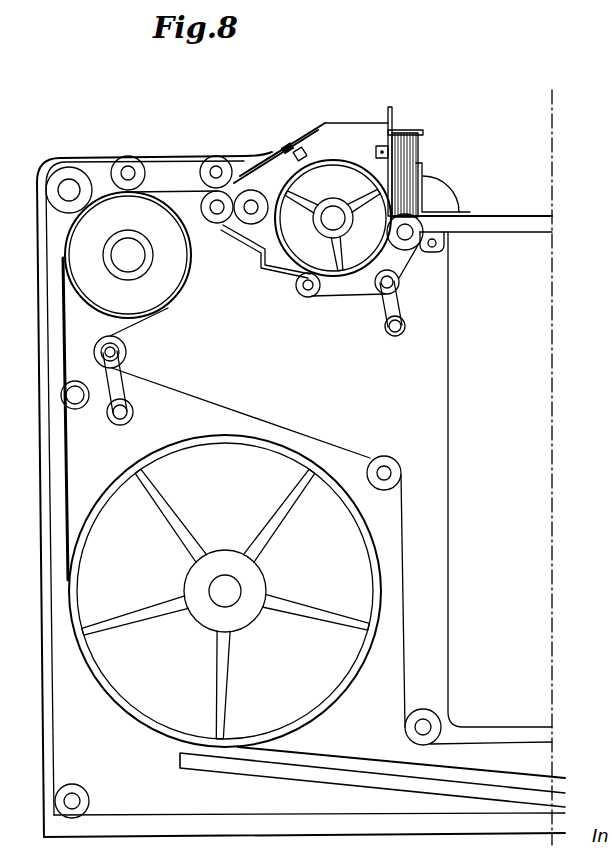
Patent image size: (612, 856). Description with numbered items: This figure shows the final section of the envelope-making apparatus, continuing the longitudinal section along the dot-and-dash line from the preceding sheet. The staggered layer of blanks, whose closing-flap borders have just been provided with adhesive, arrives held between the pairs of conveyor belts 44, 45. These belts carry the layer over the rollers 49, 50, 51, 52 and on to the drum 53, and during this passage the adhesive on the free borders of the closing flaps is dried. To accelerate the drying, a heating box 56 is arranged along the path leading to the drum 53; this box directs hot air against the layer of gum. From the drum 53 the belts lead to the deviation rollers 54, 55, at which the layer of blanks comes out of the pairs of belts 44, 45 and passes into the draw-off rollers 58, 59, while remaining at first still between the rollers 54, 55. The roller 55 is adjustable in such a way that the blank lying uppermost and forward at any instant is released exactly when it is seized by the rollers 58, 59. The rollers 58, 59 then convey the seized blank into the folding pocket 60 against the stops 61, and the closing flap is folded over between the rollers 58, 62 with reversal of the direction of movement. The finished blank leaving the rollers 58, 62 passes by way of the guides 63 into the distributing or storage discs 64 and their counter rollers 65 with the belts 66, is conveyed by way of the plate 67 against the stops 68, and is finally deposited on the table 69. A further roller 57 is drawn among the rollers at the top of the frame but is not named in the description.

The conveyor belts 44 is at (238, 410).
The conveyor belts 45 is at (55, 729).
The roller 49 is at (441, 726).
The roller 50 is at (401, 471).
The roller 51 is at (127, 356).
The roller 52 is at (80, 408).
The drum 53 is at (92, 520).
The deviation roller 54 is at (181, 285).
The deviation roller 55 is at (69, 168).
The heating box 56 is at (240, 773).
The roller 57 is at (130, 160).
The draw-off roller 58 is at (215, 223).
The draw-off roller 59 is at (216, 157).
The folding pocket 60 is at (269, 148).
The stops 61 is at (287, 140).
The roller 62 is at (248, 224).
The guides 63 is at (266, 268).
The distributing or storage discs 64 is at (340, 164).
The counter rollers 65 is at (308, 297).
The belts 66 is at (407, 243).
The plate 67 is at (387, 117).
The stops 68 is at (401, 136).
The table 69 is at (485, 222).